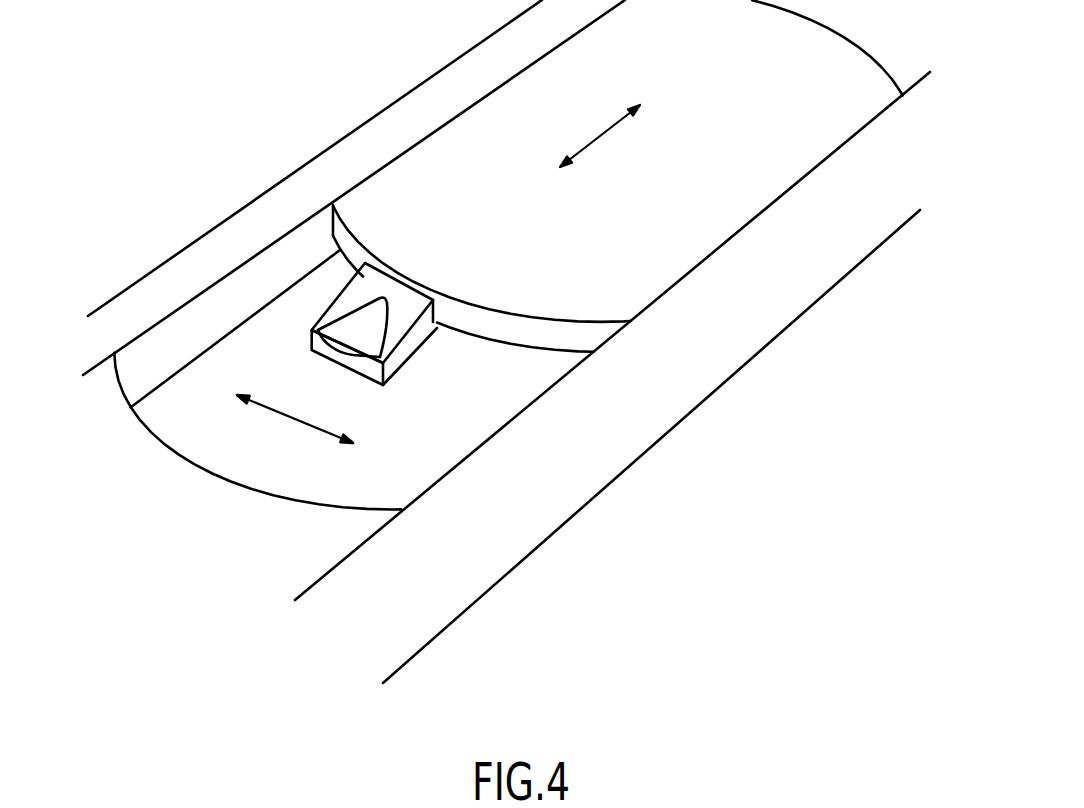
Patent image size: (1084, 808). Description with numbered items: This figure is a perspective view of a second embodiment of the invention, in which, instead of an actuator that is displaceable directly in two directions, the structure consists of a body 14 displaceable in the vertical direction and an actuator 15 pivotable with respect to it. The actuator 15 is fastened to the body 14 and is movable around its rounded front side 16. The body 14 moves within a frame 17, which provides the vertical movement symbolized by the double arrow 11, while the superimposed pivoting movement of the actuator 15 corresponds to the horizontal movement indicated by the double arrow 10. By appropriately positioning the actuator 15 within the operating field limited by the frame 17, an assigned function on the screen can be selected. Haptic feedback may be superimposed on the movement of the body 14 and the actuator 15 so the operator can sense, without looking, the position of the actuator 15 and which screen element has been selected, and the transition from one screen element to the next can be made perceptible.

The double arrow 10 is at (290, 418).
The double arrow 11 is at (607, 133).
The body 14 is at (640, 260).
The actuator 15 is at (398, 325).
The rounded front side 16 is at (508, 335).
The frame 17 is at (218, 280).